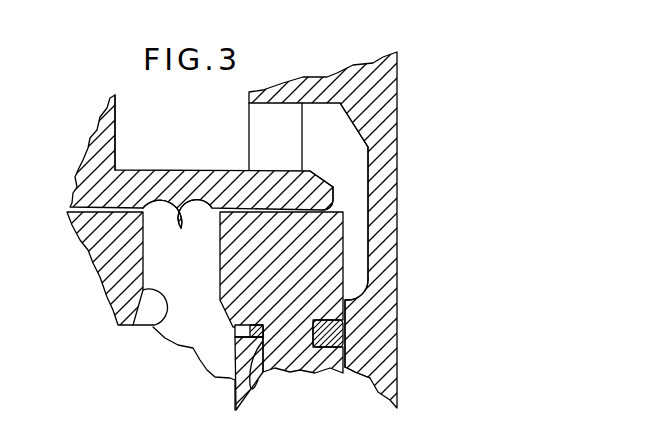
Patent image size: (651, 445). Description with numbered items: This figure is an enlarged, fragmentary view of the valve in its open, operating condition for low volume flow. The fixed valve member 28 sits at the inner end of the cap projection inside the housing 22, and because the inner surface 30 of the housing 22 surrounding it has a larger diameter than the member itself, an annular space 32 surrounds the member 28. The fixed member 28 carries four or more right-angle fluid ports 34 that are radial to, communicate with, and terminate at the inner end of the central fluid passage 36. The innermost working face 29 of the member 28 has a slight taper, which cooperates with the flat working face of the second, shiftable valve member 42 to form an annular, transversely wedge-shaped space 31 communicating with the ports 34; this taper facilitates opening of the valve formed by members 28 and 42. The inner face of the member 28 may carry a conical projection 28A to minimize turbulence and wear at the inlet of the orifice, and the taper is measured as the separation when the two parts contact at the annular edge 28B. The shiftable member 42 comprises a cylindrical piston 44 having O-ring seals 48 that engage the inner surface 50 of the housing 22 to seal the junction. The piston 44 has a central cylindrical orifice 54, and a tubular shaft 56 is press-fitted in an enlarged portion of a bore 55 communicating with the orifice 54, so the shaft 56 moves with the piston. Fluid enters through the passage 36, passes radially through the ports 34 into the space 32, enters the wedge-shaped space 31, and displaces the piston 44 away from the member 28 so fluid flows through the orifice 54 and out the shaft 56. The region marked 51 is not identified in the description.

The housing 22 is at (398, 298).
The first, fixed valve member 28 is at (310, 180).
The conical projection 28A is at (211, 212).
The annular edge 28B is at (147, 214).
The working face 29 is at (327, 211).
The inner surface 30 is at (358, 233).
The annular, transversely wedge-shaped space 31 is at (76, 182).
The annular space 32 is at (343, 137).
The right-angle fluid ports 34 is at (258, 121).
The central fluid passage 36 is at (118, 115).
The second, shiftable valve member 42 is at (345, 261).
The cylindrical piston 44 is at (303, 371).
The O-ring seals 48 is at (344, 332).
The inner surface 50 is at (346, 372).
The seal ring 51 is at (238, 330).
The central cylindrical orifice 54 is at (153, 328).
The bore 55 is at (251, 374).
The tube or tubular shaft 56 is at (235, 397).